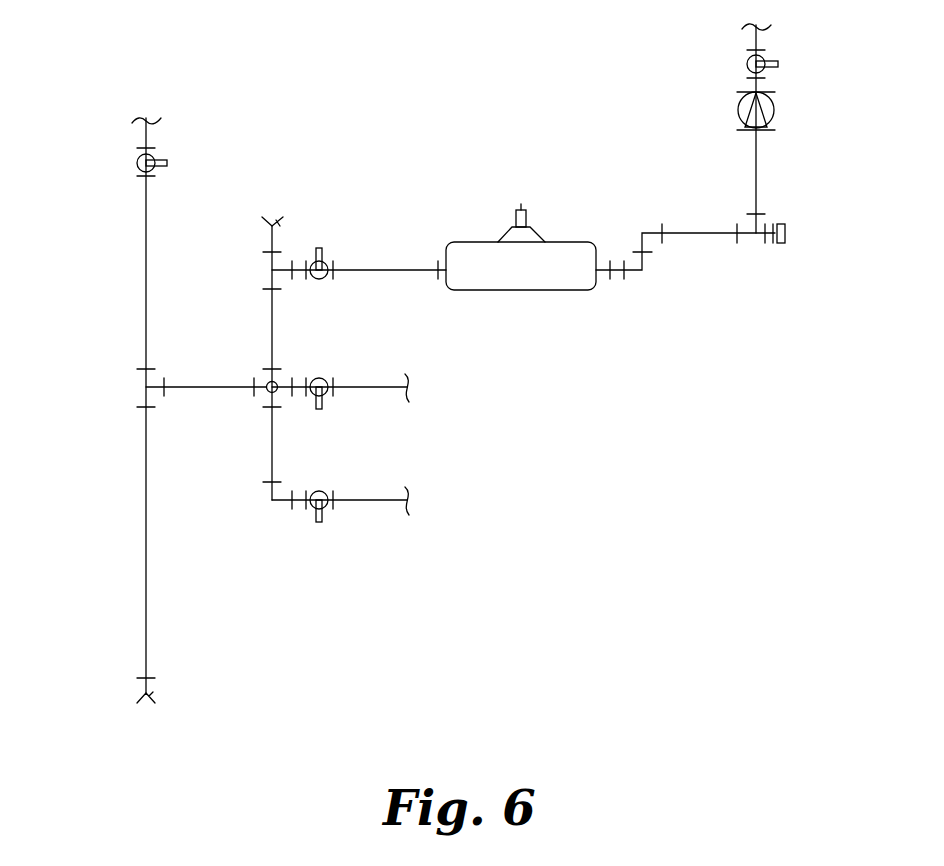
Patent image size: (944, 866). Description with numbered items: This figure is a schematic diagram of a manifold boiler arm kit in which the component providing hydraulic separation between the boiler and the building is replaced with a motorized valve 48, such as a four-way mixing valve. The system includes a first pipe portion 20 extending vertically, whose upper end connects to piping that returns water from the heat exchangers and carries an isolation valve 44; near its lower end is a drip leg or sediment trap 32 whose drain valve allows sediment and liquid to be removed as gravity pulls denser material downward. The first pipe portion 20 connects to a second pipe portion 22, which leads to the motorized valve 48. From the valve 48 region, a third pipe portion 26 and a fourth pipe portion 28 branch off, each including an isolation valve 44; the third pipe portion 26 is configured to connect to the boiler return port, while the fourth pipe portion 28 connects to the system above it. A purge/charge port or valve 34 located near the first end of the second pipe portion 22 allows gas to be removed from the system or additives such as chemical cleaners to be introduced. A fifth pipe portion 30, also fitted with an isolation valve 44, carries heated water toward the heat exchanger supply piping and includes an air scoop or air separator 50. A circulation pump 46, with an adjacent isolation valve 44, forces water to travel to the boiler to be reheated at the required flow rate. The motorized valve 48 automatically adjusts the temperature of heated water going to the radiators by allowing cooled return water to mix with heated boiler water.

The first pipe portion 20 is at (147, 291).
The second pipe portion 22 is at (187, 386).
The third pipe portion 26 is at (358, 500).
The fourth pipe portion 28 is at (358, 387).
The fifth pipe portion 30 is at (398, 270).
The drip leg or sediment trap 32 is at (148, 686).
The purge/charge port or valve 34 is at (284, 222).
The isolation valve 44 is at (138, 160).
The circulation pump 46 is at (776, 110).
The motorized valve 48 is at (278, 383).
The air scoop or air separator 50 is at (566, 242).